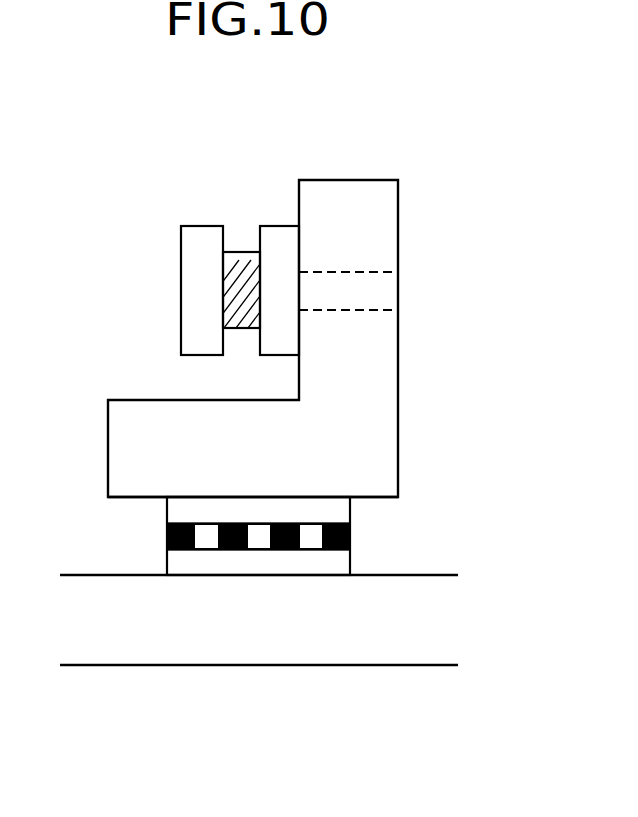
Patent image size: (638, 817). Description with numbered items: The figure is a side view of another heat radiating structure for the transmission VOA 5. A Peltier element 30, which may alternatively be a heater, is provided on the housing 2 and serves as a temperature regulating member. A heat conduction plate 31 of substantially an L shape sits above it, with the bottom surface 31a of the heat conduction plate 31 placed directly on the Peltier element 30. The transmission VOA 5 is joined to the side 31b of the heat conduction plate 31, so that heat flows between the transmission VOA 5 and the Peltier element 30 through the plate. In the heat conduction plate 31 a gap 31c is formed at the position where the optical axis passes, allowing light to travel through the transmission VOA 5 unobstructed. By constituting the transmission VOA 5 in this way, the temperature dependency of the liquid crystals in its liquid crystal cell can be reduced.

The transmission VOA 5 is at (300, 167).
The heat conduction plate 31 is at (382, 237).
The bottom surface 31a is at (213, 497).
The side 31b is at (299, 252).
The gap 31c is at (352, 310).
The Peltier element 30 is at (350, 533).
The housing 2 is at (278, 637).